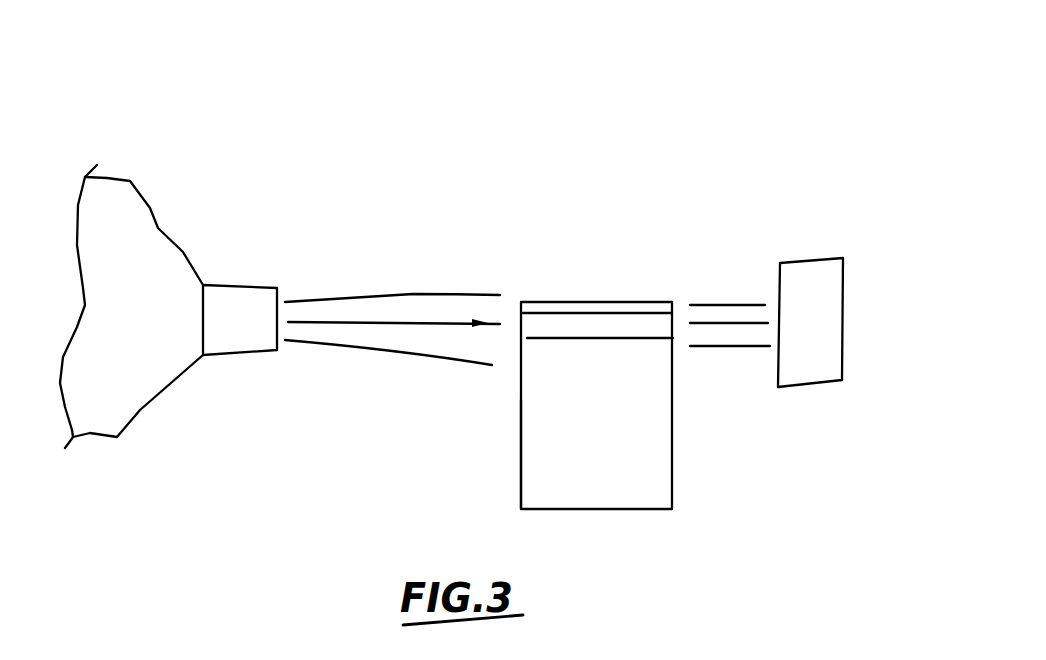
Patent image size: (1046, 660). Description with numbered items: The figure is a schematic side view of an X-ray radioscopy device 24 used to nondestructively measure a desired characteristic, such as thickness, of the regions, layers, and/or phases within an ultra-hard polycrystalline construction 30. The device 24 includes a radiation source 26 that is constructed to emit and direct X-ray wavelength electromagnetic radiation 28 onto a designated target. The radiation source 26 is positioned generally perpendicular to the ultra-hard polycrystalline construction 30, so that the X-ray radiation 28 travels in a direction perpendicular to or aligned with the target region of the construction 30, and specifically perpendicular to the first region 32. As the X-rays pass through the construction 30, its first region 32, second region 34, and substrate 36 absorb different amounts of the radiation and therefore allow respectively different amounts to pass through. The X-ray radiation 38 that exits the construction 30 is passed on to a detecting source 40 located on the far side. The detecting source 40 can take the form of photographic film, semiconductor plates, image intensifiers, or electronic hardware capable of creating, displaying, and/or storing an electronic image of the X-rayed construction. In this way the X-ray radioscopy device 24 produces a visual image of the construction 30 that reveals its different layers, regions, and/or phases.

The X-ray radioscopy device 24 is at (700, 228).
The radiation source 26 is at (242, 303).
The X-ray wavelength electromagnetic radiation 28 is at (413, 293).
The ultra-hard polycrystalline construction 30 is at (645, 455).
The first region 32 is at (595, 312).
The second region 34 is at (653, 328).
The substrate 36 is at (537, 403).
The exiting X-ray radiation 38 is at (732, 302).
The detecting source 40 is at (832, 317).